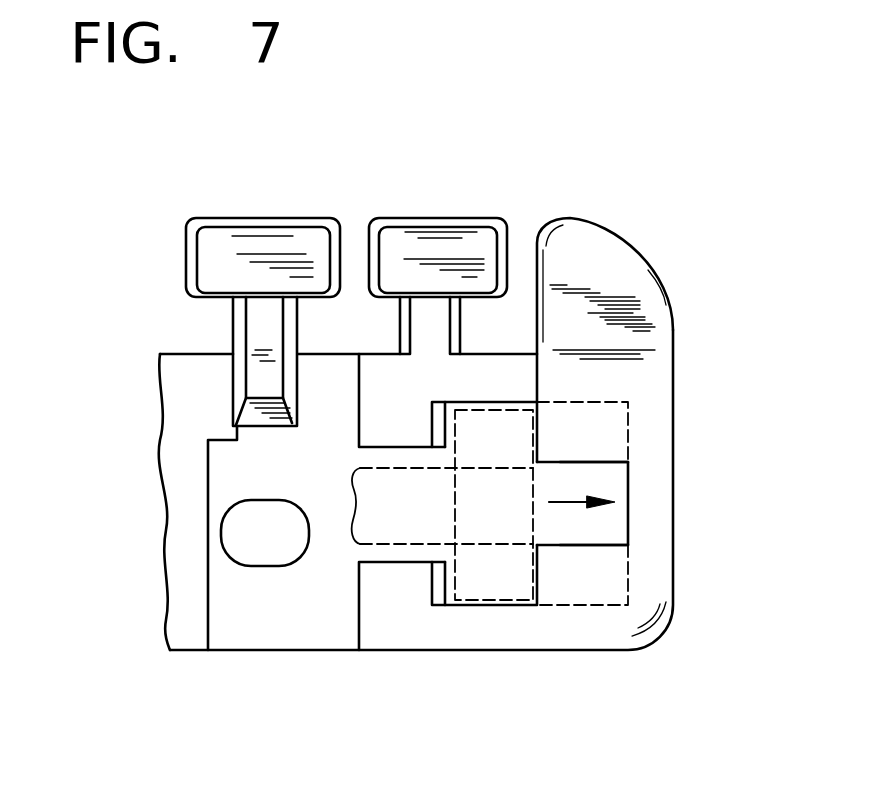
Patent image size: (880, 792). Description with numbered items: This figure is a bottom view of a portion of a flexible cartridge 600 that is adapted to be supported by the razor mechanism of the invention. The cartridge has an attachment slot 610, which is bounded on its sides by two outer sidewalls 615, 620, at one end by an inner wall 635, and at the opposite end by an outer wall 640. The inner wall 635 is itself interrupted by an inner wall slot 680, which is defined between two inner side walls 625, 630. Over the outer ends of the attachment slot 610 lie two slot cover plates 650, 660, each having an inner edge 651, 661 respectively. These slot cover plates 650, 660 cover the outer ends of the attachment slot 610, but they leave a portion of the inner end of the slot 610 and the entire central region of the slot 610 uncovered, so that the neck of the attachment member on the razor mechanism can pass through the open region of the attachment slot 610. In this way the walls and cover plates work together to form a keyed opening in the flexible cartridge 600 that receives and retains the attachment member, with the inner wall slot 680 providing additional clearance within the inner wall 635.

The flexible cartridge 600 is at (614, 163).
The attachment slot 610 is at (618, 527).
The outer sidewall 615 is at (510, 607).
The outer sidewall 620 is at (488, 380).
The inner side wall 625 is at (420, 562).
The inner side wall 630 is at (385, 462).
The inner wall 635 is at (432, 413).
The outer wall 640 is at (630, 485).
The slot cover plate 650 is at (588, 595).
The inner edge 651 is at (607, 547).
The slot cover plate 660 is at (597, 410).
The inner edge 661 is at (610, 462).
The inner wall slot 680 is at (422, 462).